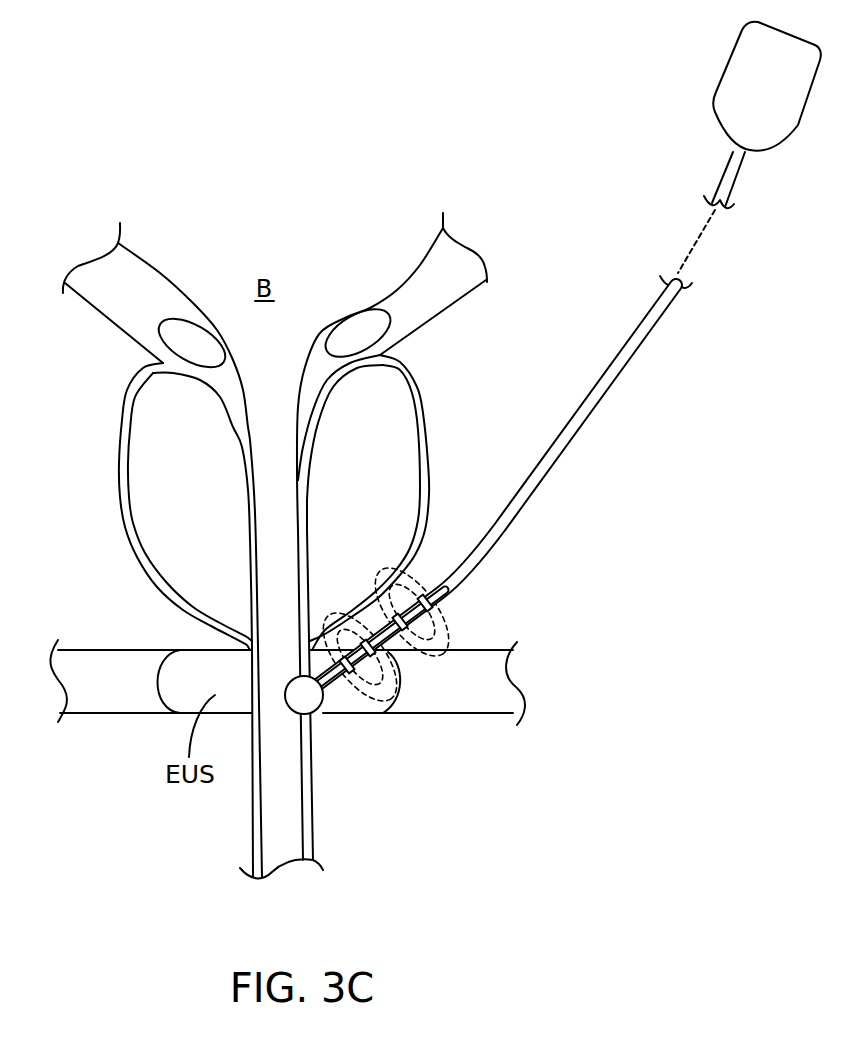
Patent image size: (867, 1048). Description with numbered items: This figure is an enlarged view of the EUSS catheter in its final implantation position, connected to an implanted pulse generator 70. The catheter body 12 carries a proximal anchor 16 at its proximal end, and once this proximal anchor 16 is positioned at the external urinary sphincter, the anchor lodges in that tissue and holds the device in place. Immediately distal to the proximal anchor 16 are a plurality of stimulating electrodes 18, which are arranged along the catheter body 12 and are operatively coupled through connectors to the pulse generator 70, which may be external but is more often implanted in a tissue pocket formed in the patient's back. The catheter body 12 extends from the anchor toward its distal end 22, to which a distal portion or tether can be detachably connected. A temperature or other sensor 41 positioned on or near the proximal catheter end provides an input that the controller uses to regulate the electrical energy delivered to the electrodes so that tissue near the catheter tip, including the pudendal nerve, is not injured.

The catheter body 12 is at (603, 411).
The proximal anchor 16 is at (308, 702).
The stimulating electrodes 18 is at (424, 565).
The distal end 22 is at (455, 617).
The sensor 41 is at (390, 632).
The pulse generator 70 is at (754, 99).